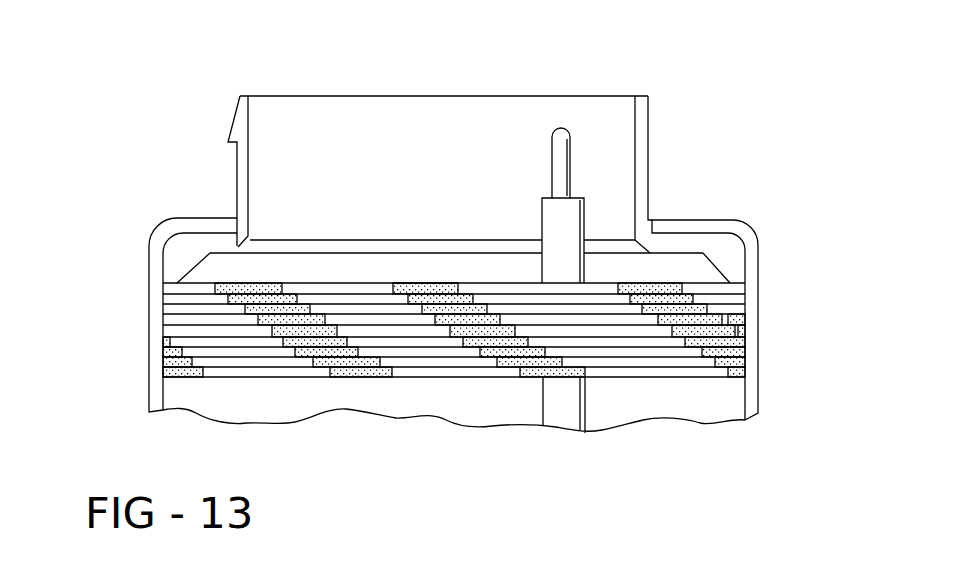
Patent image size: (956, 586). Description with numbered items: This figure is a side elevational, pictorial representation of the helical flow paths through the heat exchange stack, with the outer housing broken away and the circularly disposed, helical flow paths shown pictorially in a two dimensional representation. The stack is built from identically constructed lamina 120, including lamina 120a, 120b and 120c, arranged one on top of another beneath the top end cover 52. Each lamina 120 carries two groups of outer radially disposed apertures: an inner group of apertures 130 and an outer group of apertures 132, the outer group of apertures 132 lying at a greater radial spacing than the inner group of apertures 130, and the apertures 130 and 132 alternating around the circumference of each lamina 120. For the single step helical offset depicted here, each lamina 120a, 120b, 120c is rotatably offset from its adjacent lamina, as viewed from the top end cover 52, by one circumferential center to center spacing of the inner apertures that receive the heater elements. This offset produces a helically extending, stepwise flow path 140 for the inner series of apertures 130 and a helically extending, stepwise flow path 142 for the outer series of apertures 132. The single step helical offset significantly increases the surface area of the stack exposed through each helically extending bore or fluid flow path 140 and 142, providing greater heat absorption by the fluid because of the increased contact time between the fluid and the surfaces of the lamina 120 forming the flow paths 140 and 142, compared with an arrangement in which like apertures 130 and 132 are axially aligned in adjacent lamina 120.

The top end cover 52 is at (654, 156).
The lamina 120 is at (392, 291).
The lamina 120a is at (178, 307).
The lamina 120b is at (173, 320).
The lamina 120c is at (175, 330).
The inner group of apertures 130 is at (282, 290).
The outer group of apertures 132 is at (452, 283).
The helically extending stepwise flow path 140 is at (740, 337).
The helically extending stepwise flow path 142 is at (437, 283).